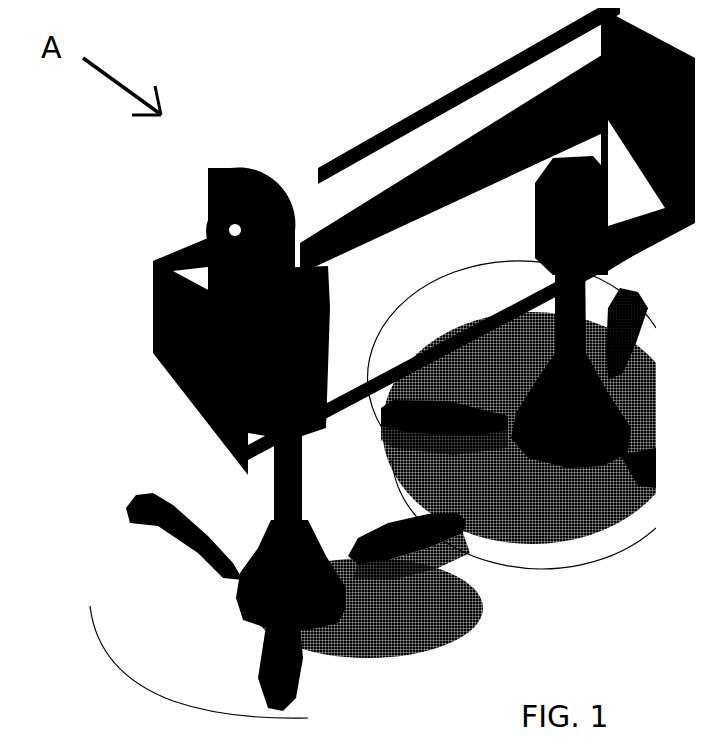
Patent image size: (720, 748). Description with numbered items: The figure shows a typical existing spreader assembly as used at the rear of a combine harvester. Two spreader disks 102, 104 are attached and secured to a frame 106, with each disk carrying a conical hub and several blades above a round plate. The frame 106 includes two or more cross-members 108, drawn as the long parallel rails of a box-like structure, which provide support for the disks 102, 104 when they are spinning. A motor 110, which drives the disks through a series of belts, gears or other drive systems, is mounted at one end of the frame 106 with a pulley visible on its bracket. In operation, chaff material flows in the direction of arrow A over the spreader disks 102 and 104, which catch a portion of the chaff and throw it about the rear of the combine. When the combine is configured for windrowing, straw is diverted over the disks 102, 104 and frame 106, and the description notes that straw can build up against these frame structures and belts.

The spreader disk 102 is at (106, 591).
The spreader disk 104 is at (554, 525).
The frame 106 is at (148, 357).
The cross-members 108 is at (462, 315).
The motor 110 is at (198, 203).